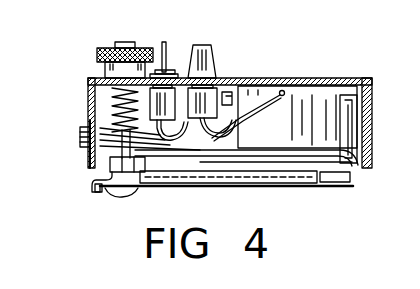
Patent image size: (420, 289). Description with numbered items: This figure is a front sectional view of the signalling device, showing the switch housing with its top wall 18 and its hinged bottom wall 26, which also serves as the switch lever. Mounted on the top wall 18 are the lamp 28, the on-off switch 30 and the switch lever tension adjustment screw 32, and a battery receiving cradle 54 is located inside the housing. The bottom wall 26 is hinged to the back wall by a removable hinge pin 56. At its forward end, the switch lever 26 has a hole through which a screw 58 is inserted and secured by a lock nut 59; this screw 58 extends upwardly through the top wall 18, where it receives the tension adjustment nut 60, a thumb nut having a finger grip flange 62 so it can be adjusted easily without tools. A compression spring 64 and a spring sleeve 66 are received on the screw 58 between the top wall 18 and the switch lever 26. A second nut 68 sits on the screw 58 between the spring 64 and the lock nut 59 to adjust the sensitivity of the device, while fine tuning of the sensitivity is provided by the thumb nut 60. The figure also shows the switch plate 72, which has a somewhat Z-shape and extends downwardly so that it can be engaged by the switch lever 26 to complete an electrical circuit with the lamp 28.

The top wall 18 is at (303, 80).
The hinged bottom wall 26 is at (187, 188).
The lamp 28 is at (212, 56).
The on-off switch 30 is at (168, 43).
The switch lever tension adjustment screw 32 is at (148, 46).
The battery receiving cradle 54 is at (337, 123).
The removable hinge pin 56 is at (95, 193).
The screw 58 is at (122, 195).
The lock nut 59 is at (90, 178).
The tension adjustment nut 60 is at (105, 69).
The finger grip flange 62 is at (100, 50).
The compression spring 64 is at (108, 110).
The spring sleeve 66 is at (108, 96).
The second nut 68 is at (110, 163).
The switch plate 72 is at (257, 173).